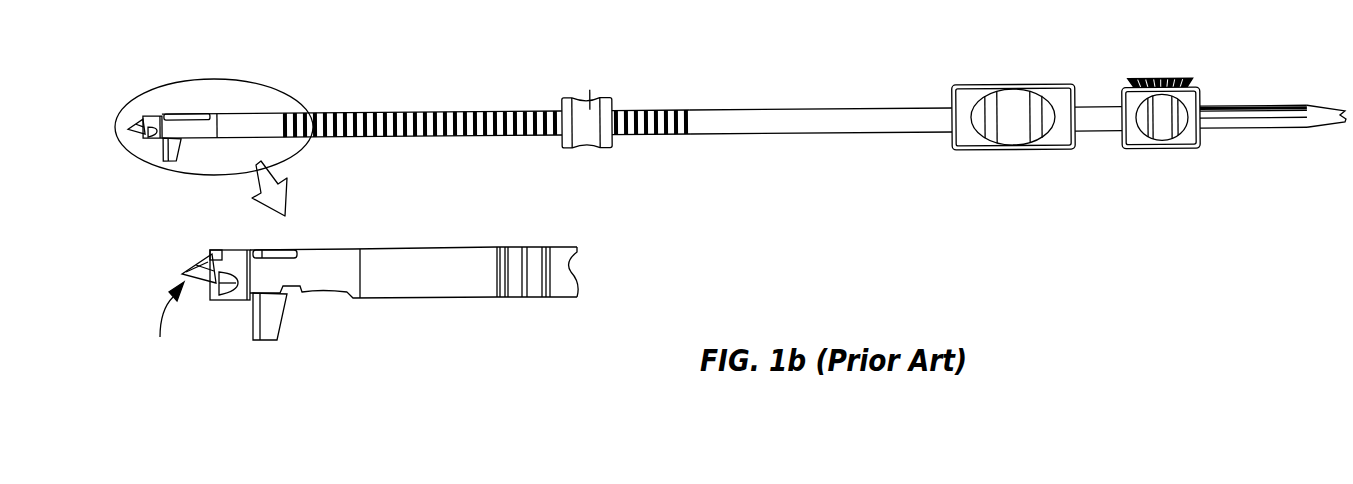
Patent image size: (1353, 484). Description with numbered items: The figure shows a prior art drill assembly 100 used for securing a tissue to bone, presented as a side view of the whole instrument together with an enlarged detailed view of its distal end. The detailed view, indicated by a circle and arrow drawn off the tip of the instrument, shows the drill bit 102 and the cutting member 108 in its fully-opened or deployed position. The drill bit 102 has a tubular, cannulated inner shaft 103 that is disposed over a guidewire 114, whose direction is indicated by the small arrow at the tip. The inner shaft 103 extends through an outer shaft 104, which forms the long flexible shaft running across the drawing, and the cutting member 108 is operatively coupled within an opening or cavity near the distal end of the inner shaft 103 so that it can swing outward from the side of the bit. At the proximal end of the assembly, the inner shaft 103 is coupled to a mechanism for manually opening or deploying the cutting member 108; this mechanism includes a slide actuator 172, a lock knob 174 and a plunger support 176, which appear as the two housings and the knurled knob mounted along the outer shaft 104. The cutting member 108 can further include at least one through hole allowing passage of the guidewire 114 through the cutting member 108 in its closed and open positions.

The drill assembly 100 is at (842, 32).
The drill bit 102 is at (233, 247).
The inner shaft 103 is at (357, 248).
The outer shaft 104 is at (780, 118).
The cutting member 108 is at (287, 323).
The guidewire 114 is at (158, 333).
The slide actuator 172 is at (1028, 153).
The lock knob 174 is at (1176, 80).
The plunger support 176 is at (1163, 153).